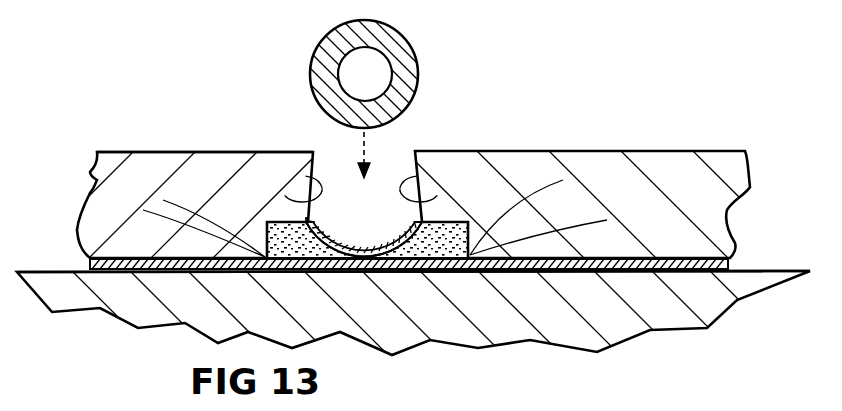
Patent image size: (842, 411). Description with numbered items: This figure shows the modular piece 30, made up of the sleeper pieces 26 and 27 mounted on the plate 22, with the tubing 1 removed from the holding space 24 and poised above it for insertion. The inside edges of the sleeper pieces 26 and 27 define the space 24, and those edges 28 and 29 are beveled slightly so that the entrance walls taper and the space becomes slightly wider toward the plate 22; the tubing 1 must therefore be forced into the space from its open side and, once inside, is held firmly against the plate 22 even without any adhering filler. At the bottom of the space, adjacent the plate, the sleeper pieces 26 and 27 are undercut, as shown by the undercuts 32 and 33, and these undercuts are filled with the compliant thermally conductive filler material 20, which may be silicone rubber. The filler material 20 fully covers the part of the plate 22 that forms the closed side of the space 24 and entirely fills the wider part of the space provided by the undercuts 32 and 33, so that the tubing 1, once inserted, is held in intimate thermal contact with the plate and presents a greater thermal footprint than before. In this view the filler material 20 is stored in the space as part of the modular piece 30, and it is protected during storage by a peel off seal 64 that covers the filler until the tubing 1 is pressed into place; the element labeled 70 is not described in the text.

The tubing 1 is at (310, 90).
The compliant thermally conductive filler material 20 is at (312, 245).
The plate 22 is at (370, 277).
The space 24 is at (398, 117).
The sleeper piece 26 is at (692, 204).
The sleeper piece 27 is at (117, 215).
The edge 28 is at (469, 254).
The edge 29 is at (312, 165).
The modular piece 30 is at (128, 140).
The undercut 32 is at (445, 272).
The undercut 33 is at (285, 270).
The peel off seal 64 is at (342, 238).
The substrate 70 is at (733, 305).